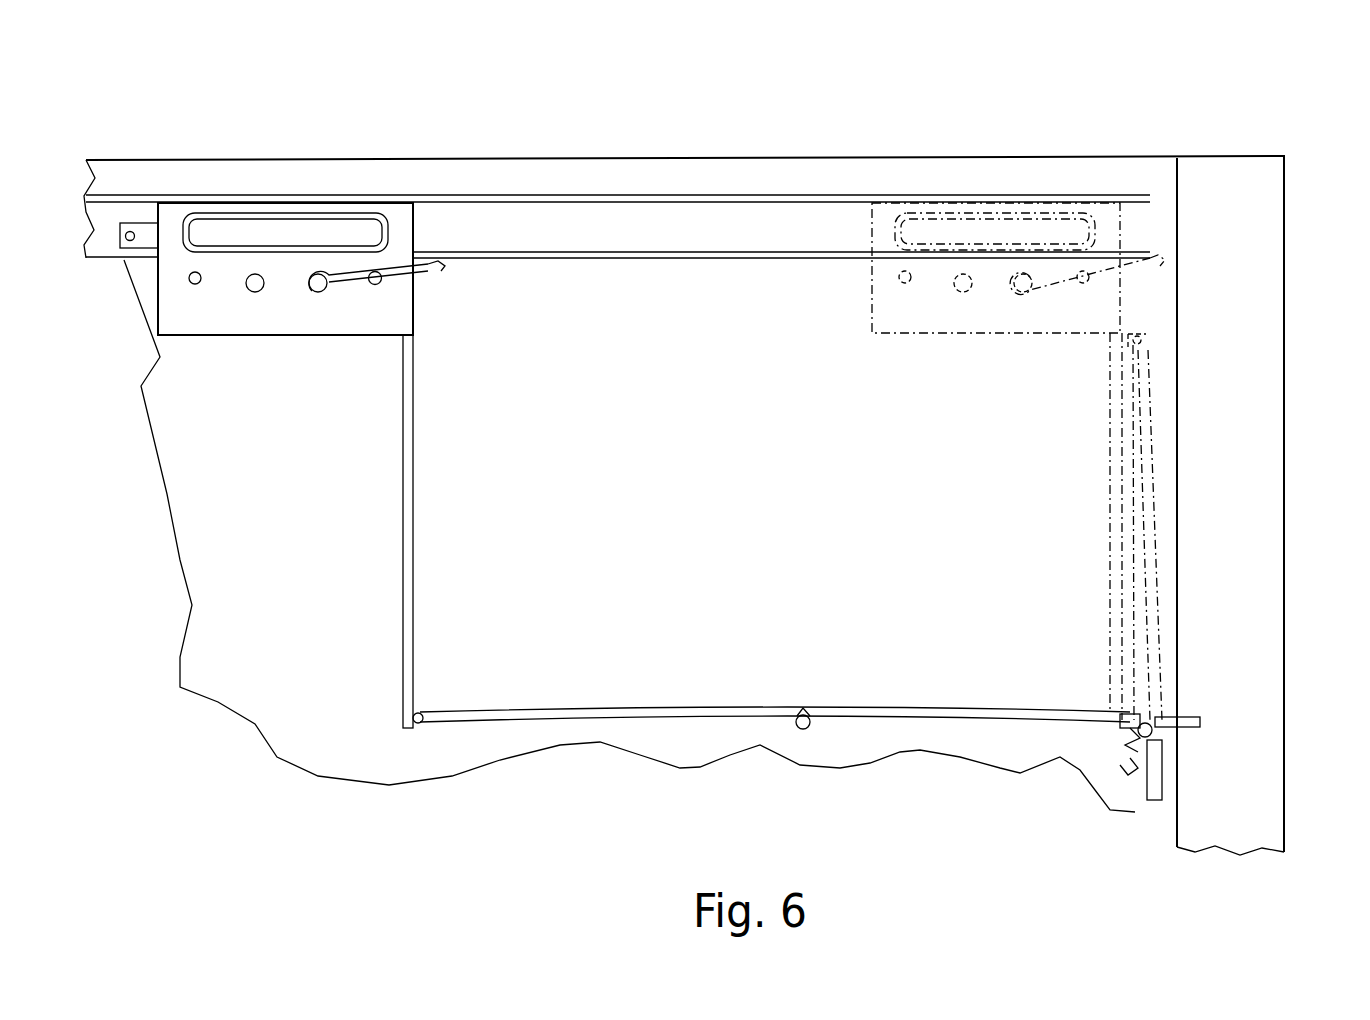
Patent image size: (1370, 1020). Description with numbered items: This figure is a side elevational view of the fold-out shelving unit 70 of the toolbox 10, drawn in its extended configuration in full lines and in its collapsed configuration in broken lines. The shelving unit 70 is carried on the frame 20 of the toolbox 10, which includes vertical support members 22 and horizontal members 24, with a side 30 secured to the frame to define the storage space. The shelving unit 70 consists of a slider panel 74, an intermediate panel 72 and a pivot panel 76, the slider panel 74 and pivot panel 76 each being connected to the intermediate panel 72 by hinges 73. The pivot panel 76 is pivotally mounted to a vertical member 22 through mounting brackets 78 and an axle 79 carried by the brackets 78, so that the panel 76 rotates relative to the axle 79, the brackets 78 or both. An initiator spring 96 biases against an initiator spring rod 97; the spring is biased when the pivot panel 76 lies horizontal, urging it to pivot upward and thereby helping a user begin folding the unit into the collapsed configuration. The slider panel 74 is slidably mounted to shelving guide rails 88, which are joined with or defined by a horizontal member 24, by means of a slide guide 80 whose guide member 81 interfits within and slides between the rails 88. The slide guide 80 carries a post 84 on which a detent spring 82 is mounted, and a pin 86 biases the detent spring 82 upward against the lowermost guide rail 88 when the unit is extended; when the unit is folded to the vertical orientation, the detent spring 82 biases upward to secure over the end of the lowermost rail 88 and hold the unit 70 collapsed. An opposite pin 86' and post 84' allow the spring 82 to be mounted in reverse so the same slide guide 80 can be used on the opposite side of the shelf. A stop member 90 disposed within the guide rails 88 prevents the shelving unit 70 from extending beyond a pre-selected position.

The toolbox 10 is at (843, 118).
The frame 20 is at (980, 150).
The vertical support member 22 is at (1245, 372).
The horizontal member 24 is at (738, 157).
The side 30 is at (230, 572).
The fold-out shelving unit 70 is at (358, 603).
The intermediate panel 72 is at (638, 708).
The hinge 73 is at (800, 712).
The slider panel 74 is at (417, 540).
The pivot panel 76 is at (955, 708).
The mounting bracket 78 is at (1165, 695).
The axle 79 is at (1160, 742).
The slide guide 80 is at (237, 193).
The guide member 81 is at (178, 225).
The detent spring 82 is at (437, 278).
The post 84 is at (304, 362).
The post 84' is at (242, 357).
The pin 86 is at (355, 339).
The pin 86' is at (190, 356).
The shelving guide rail 88 is at (553, 200).
The stop member 90 is at (130, 222).
The initiator spring 96 is at (1135, 790).
The initiator spring rod 97 is at (1140, 757).